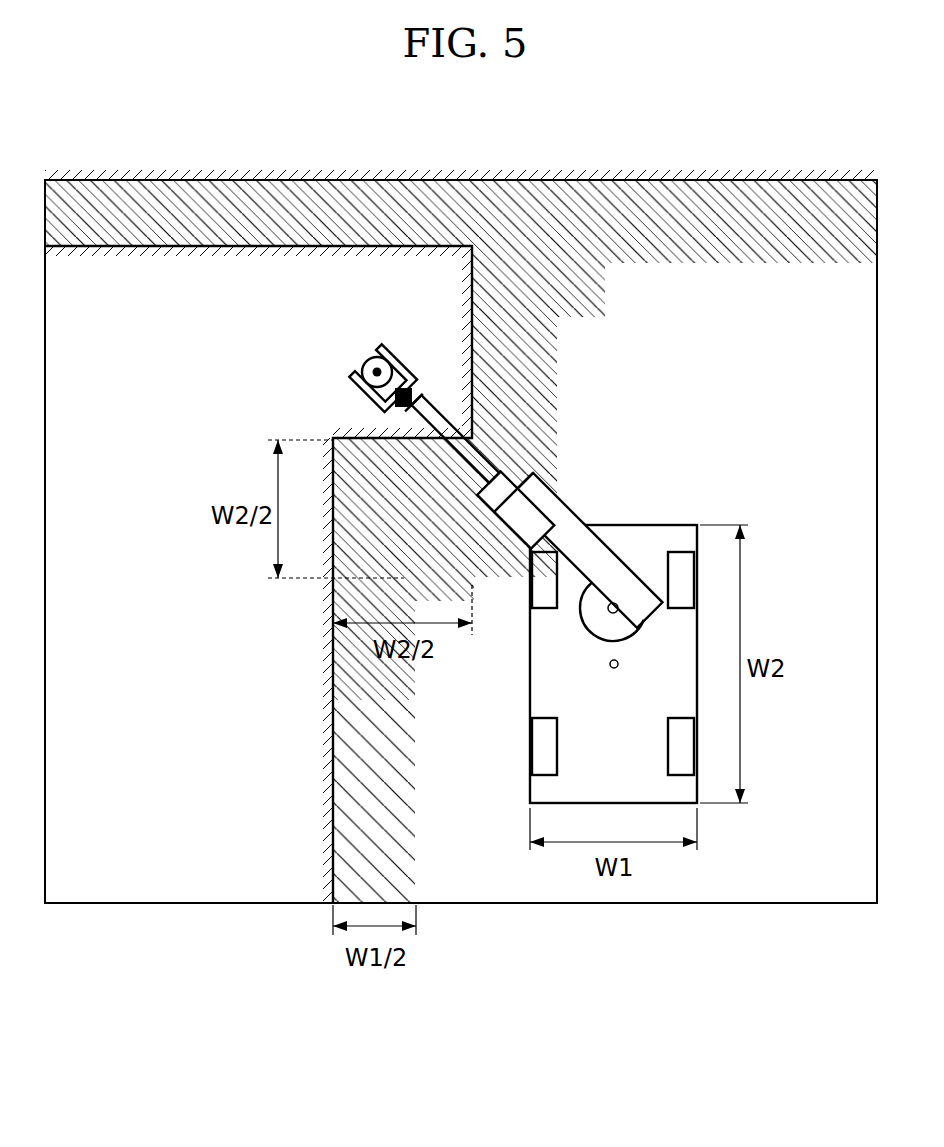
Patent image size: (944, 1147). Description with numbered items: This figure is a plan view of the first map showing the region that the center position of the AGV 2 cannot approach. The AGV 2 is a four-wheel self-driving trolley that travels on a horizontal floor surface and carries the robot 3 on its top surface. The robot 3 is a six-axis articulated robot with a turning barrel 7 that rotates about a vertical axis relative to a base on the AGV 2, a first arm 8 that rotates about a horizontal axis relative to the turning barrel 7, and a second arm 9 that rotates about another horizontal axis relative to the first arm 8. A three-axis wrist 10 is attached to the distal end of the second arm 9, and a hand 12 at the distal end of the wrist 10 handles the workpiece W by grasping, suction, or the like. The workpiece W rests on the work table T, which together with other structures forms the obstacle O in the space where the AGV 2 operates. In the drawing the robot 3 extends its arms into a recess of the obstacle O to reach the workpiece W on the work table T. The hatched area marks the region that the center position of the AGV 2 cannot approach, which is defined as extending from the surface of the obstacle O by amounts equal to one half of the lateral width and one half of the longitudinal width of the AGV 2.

The Automated Guided Vehicle 2 is at (690, 522).
The robot 3 is at (467, 496).
The turning barrel 7 is at (585, 628).
The first arm 8 is at (610, 578).
The second arm 9 is at (531, 549).
The wrist 10 is at (435, 385).
The hand 12 is at (352, 390).
The workpiece W is at (362, 369).
The work table T is at (452, 346).
The obstacle O is at (490, 275).